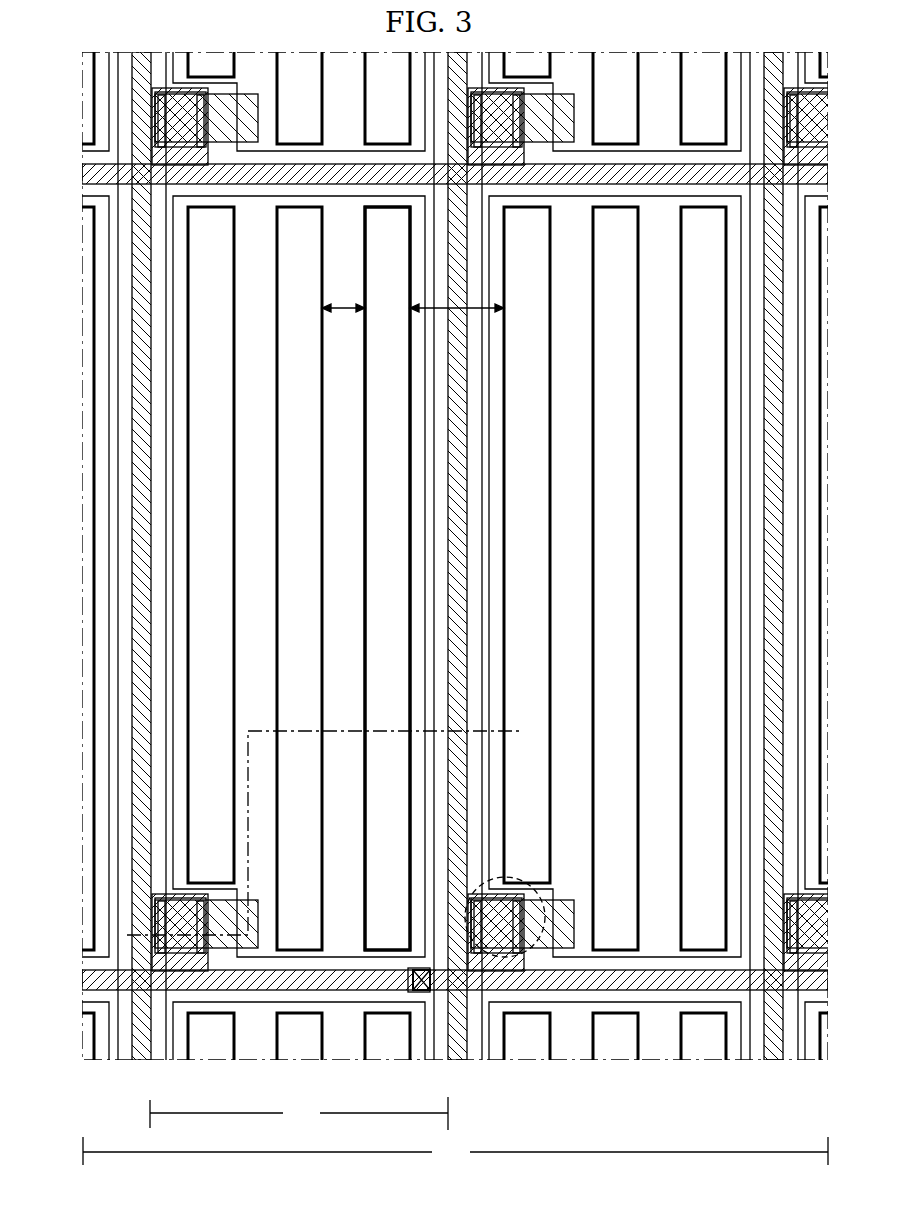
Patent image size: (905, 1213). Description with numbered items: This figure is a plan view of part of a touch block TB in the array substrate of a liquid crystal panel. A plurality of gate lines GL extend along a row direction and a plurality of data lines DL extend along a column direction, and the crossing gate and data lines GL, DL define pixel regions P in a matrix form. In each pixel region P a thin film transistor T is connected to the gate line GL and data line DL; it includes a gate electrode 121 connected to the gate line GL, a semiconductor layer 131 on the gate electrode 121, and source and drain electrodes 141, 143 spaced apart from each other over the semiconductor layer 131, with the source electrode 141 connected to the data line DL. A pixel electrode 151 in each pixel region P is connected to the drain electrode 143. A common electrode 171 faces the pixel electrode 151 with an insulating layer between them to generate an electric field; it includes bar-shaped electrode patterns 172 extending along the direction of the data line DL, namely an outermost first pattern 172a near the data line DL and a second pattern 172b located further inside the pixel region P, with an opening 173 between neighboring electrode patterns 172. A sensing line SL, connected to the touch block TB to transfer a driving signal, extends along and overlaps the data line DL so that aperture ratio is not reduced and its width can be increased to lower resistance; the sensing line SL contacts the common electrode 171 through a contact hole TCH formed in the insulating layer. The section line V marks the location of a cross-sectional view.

The common electrode 171 is at (182, 293).
The electrode patterns 172 is at (440, 288).
The first pattern 172a is at (457, 300).
The second pattern 172b is at (343, 300).
The opening 173 is at (383, 403).
The pixel electrode 151 is at (173, 333).
The sensing line SL is at (115, 387).
The data line DL is at (132, 420).
The gate line GL is at (97, 980).
The gate electrode 121 is at (155, 878).
The semiconductor layer 131 is at (176, 955).
The source electrode 141 is at (132, 915).
The drain electrode 143 is at (222, 943).
The contact hole TCH is at (405, 979).
The thin film transistor T is at (490, 960).
The section line V is at (127, 938).
The pixel region P is at (299, 1113).
The touch block TB is at (455, 1151).